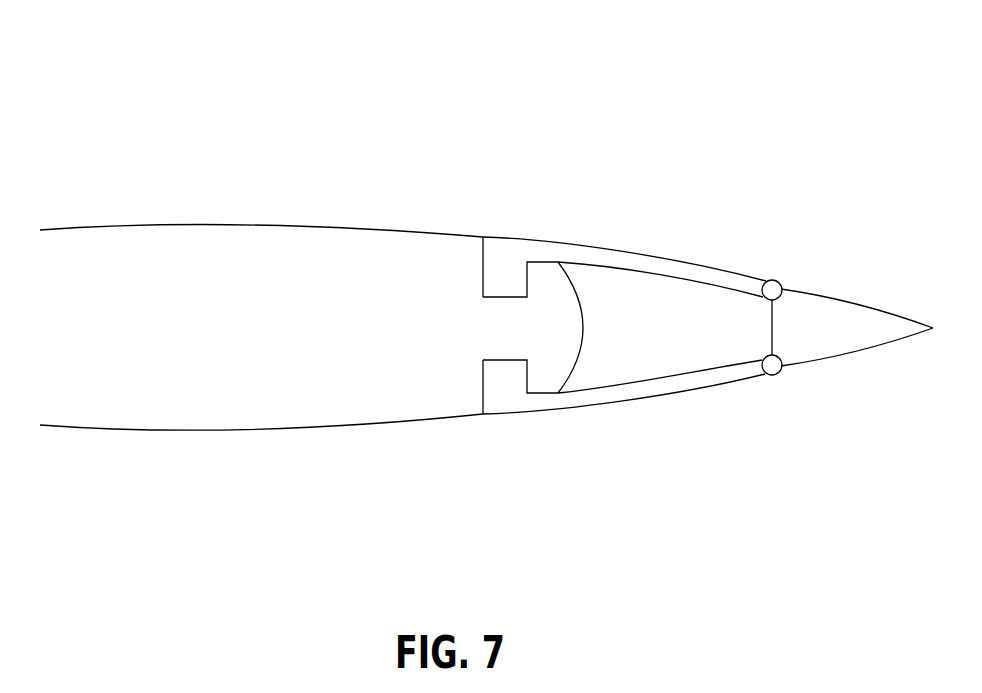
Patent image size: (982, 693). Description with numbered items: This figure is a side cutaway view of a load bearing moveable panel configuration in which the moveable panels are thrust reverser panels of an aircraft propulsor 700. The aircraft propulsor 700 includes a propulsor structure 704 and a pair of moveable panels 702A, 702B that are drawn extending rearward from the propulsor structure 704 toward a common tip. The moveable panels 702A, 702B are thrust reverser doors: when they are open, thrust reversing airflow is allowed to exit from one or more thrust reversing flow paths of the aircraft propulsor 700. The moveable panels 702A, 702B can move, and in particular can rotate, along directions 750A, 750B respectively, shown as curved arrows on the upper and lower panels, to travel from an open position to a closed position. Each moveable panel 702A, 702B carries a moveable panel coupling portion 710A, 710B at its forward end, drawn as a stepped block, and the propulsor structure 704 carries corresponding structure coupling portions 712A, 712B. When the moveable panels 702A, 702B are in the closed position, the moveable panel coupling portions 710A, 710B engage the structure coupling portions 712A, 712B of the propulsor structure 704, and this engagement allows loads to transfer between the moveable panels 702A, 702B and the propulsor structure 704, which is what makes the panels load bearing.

The aircraft propulsor 700 is at (198, 78).
The propulsor structure 704 is at (325, 227).
The moveable panel coupling portion 710A is at (483, 262).
The moveable panel coupling portion 710B is at (483, 393).
The structure coupling portion 712A is at (483, 278).
The structure coupling portion 712B is at (483, 378).
The moveable panel 702A is at (700, 267).
The moveable panel 702B is at (703, 393).
The direction 750A is at (599, 217).
The direction 750B is at (599, 436).